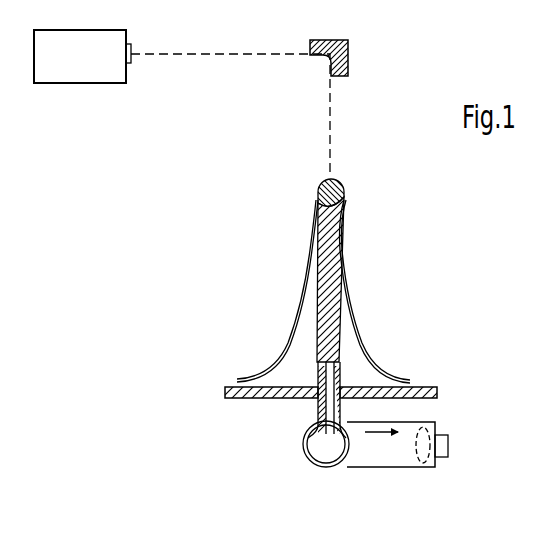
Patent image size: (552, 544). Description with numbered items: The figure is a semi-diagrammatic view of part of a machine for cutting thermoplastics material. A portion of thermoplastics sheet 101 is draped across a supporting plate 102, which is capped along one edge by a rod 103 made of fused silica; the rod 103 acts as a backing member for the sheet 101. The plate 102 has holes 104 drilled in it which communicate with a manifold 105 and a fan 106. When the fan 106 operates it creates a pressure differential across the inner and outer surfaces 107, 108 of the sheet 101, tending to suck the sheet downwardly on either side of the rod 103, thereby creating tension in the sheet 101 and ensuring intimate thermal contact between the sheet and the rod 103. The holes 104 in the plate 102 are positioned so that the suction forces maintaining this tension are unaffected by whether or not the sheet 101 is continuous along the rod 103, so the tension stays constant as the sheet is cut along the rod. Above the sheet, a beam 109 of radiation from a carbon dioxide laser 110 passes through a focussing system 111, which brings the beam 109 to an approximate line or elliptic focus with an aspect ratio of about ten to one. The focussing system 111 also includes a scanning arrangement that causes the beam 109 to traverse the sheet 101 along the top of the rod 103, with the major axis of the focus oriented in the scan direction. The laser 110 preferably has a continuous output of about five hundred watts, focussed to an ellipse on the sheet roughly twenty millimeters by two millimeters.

The thermoplastics sheet 101 is at (292, 330).
The supporting plate 102 is at (345, 270).
The rod 103 is at (344, 186).
The holes 104 is at (340, 363).
The manifold 105 is at (316, 462).
The fan 106 is at (439, 425).
The inner surface 107 is at (291, 357).
The outer surface 108 is at (304, 268).
The beam 109 is at (186, 54).
The carbon dioxide laser 110 is at (97, 83).
The focussing system 111 is at (348, 50).